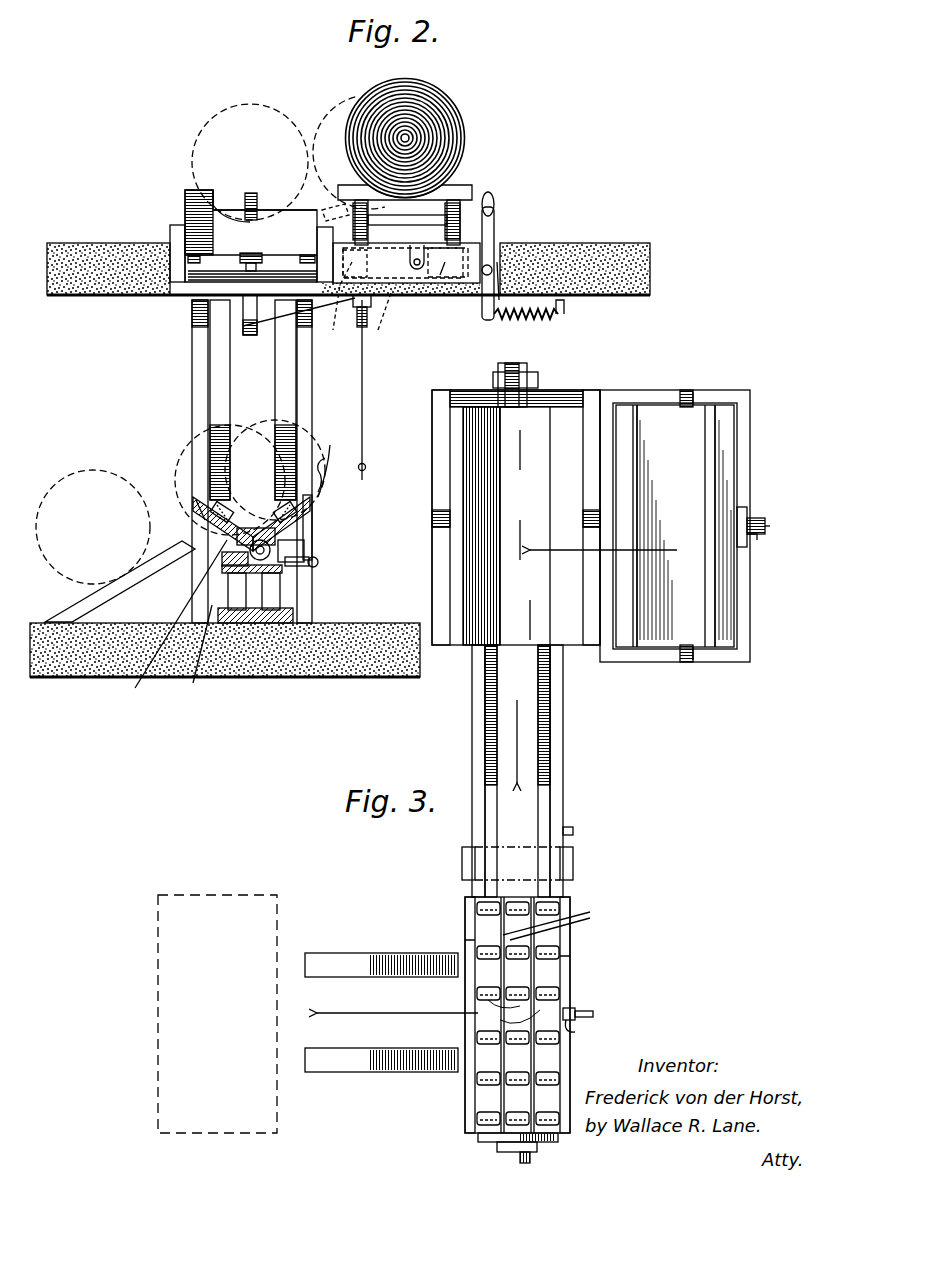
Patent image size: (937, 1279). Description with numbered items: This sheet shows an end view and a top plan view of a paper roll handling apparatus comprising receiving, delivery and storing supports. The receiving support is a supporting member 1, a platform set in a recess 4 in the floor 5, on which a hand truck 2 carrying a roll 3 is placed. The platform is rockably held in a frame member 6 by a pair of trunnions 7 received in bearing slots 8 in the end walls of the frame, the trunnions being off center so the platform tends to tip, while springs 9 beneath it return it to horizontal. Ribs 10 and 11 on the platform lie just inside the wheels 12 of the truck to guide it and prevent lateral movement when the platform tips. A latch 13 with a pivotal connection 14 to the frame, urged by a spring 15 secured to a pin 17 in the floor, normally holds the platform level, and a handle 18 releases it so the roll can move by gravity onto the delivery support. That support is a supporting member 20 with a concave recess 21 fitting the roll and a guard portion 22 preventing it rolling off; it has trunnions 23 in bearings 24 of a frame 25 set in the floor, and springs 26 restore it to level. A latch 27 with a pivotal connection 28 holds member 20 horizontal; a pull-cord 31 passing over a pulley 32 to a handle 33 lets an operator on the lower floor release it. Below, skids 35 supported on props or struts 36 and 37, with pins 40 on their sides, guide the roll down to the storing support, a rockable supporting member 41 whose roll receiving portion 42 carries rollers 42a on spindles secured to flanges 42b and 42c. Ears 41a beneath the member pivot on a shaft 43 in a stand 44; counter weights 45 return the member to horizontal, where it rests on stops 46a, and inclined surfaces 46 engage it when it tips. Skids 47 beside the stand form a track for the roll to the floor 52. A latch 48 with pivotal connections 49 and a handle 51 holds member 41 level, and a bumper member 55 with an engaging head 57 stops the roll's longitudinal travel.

In FIG. 2, the supporting member 1 is at (398, 255).
In FIG. 3, the supporting member 1 is at (632, 526).
In FIG. 2, the hand truck 2 is at (460, 188).
In FIG. 2, the roll 3 is at (318, 118).
In FIG. 3, the roll 3 is at (278, 926).
In FIG. 2, the recess 4 is at (498, 262).
In FIG. 2, the floor 5 is at (78, 250).
In FIG. 2, the frame member 6 is at (448, 278).
In FIG. 3, the frame member 6 is at (630, 394).
In FIG. 2, the trunnions 7 is at (415, 270).
In FIG. 3, the trunnions 7 is at (684, 392).
In FIG. 2, the bearing slots 8 is at (385, 270).
In FIG. 3, the bearing slots 8 is at (696, 396).
In FIG. 2, the springs 9 is at (382, 318).
In FIG. 2, the rib 10 is at (448, 262).
In FIG. 3, the rib 10 is at (712, 460).
In FIG. 2, the rib 11 is at (407, 230).
In FIG. 3, the rib 11 is at (642, 507).
In FIG. 2, the wheels 12 is at (350, 214).
In FIG. 2, the latch 13 is at (494, 238).
In FIG. 3, the latch 13 is at (760, 516).
In FIG. 2, the pivotal connection 14 is at (485, 298).
In FIG. 3, the pivotal connection 14 is at (758, 544).
In FIG. 2, the spring 15 is at (514, 315).
In FIG. 2, the pin 17 is at (565, 310).
In FIG. 2, the handle 18 is at (494, 206).
In FIG. 3, the handle 18 is at (768, 528).
In FIG. 2, the supporting member 20 is at (190, 222).
In FIG. 3, the supporting member 20 is at (525, 517).
In FIG. 2, the concave recess 21 is at (222, 205).
In FIG. 3, the concave recess 21 is at (525, 526).
In FIG. 2, the guard portion 22 is at (205, 198).
In FIG. 3, the guard portion 22 is at (460, 545).
In FIG. 3, the trunnions 23 is at (436, 526).
In FIG. 3, the bearings 24 is at (440, 510).
In FIG. 2, the frame 25 is at (173, 242).
In FIG. 3, the frame 25 is at (440, 462).
In FIG. 2, the springs 26 is at (258, 258).
In FIG. 2, the latch 27 is at (257, 206).
In FIG. 3, the latch 27 is at (518, 368).
In FIG. 3, the pivotal connection 28 is at (539, 380).
In FIG. 2, the pull-cord 31 is at (305, 308).
In FIG. 2, the pulley 32 is at (356, 325).
In FIG. 2, the handle 33 is at (366, 468).
In FIG. 2, the skids 35 is at (224, 384).
In FIG. 3, the skids 35 is at (546, 804).
In FIG. 2, the props 36 is at (193, 380).
In FIG. 3, the props 36 is at (517, 771).
In FIG. 3, the struts 37 is at (463, 860).
In FIG. 3, the pins 40 is at (581, 827).
In FIG. 2, the rockable supporting member 41 is at (198, 512).
In FIG. 3, the rockable supporting member 41 is at (566, 930).
In FIG. 2, the ears 41a is at (228, 568).
In FIG. 2, the roll receiving portion 42 is at (262, 518).
In FIG. 3, the roll receiving portion 42 is at (515, 1000).
In FIG. 2, the rollers 42a is at (263, 495).
In FIG. 3, the rollers 42a is at (514, 1012).
In FIG. 2, the flange 42b is at (337, 515).
In FIG. 3, the flange 42b is at (588, 958).
In FIG. 2, the flange 42c is at (315, 582).
In FIG. 3, the flange 42c is at (566, 914).
In FIG. 2, the shaft 43 is at (272, 590).
In FIG. 2, the stand 44 is at (268, 622).
In FIG. 2, the counter weights 45 is at (300, 536).
In FIG. 2, the inclined surfaces 46 is at (169, 625).
In FIG. 2, the stops 46a is at (293, 547).
In FIG. 2, the skids 47 is at (128, 592).
In FIG. 3, the skids 47 is at (408, 980).
In FIG. 2, the latch 48 is at (332, 472).
In FIG. 3, the latch 48 is at (573, 1024).
In FIG. 2, the pivotal connections 49 is at (320, 562).
In FIG. 3, the pivotal connections 49 is at (574, 1008).
In FIG. 2, the handle 51 is at (330, 460).
In FIG. 3, the handle 51 is at (594, 1014).
In FIG. 2, the floor 52 is at (195, 653).
In FIG. 3, the bumper member 55 is at (500, 1148).
In FIG. 3, the engaging head 57 is at (480, 1137).